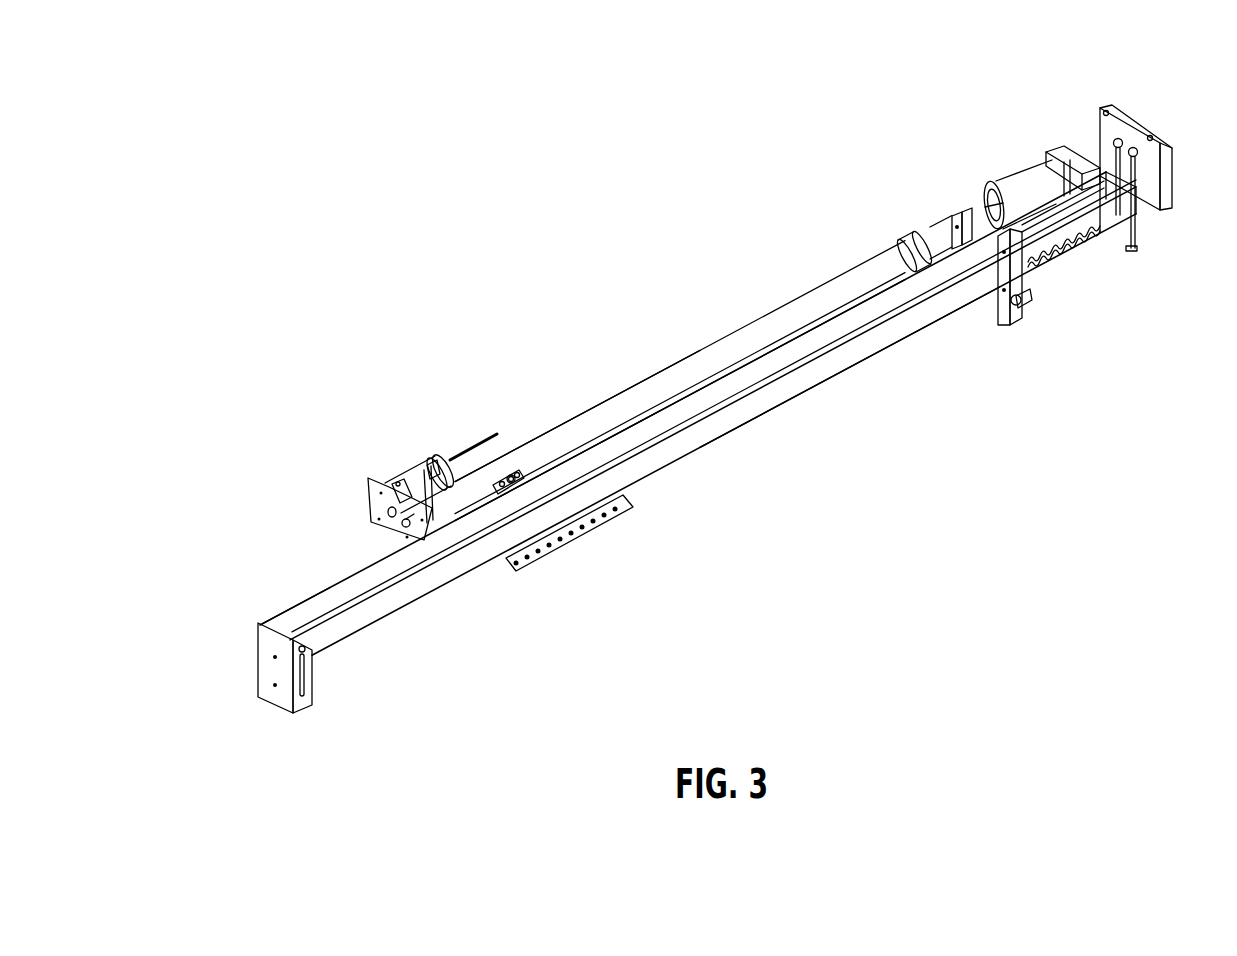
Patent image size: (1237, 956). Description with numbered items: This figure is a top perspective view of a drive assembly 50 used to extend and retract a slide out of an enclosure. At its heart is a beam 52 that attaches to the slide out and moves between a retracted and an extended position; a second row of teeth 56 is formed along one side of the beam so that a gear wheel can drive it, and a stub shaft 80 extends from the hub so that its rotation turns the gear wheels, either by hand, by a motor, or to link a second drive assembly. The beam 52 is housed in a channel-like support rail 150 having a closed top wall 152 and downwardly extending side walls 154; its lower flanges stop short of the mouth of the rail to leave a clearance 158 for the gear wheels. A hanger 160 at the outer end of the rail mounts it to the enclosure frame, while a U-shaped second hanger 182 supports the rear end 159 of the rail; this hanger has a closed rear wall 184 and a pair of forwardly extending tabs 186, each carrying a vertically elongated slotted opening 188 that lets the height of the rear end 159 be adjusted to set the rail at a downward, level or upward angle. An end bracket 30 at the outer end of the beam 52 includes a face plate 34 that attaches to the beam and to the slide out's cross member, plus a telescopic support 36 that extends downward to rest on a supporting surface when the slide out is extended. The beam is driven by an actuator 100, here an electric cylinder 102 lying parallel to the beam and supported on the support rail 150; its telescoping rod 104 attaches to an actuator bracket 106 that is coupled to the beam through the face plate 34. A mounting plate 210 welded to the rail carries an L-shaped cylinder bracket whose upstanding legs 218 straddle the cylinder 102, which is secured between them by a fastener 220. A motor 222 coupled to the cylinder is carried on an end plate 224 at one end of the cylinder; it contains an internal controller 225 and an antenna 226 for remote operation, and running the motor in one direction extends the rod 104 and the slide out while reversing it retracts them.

The end bracket 30 is at (1159, 152).
The face plate 34 is at (1168, 180).
The support 36 is at (1136, 234).
The drive assembly 50 is at (614, 370).
The beam 52 is at (1098, 232).
The second row of teeth 56 is at (1079, 252).
The stub shaft 80 is at (1021, 298).
The actuator 100 is at (703, 325).
The electric cylinder 102 is at (763, 332).
The telescoping rod 104 is at (997, 185).
The actuator bracket 106 is at (1066, 161).
The support rail 150 is at (712, 438).
The top wall 152 is at (852, 325).
The side wall 154 is at (882, 344).
The clearance 158 is at (989, 312).
The rear end 159 is at (292, 612).
The hanger 160 is at (941, 233).
The second hanger 182 is at (293, 666).
The rear wall 184 is at (280, 700).
The tab 186 is at (313, 700).
The slotted opening 188 is at (305, 688).
The mounting plate 210 is at (603, 526).
The upstanding legs 218 is at (504, 482).
The fastener 220 is at (512, 484).
The motor 222 is at (418, 472).
The end plate 224 is at (366, 503).
The internal controller 225 is at (433, 463).
The antenna 226 is at (483, 432).